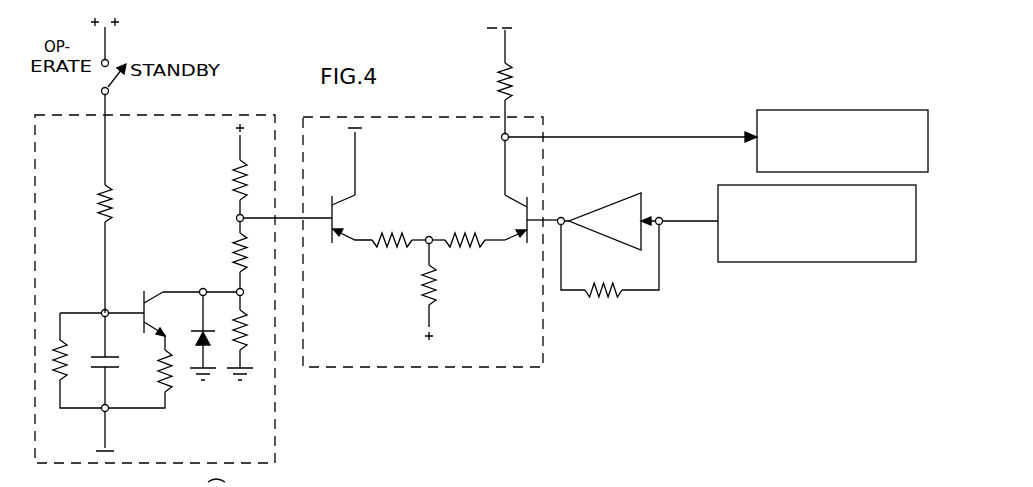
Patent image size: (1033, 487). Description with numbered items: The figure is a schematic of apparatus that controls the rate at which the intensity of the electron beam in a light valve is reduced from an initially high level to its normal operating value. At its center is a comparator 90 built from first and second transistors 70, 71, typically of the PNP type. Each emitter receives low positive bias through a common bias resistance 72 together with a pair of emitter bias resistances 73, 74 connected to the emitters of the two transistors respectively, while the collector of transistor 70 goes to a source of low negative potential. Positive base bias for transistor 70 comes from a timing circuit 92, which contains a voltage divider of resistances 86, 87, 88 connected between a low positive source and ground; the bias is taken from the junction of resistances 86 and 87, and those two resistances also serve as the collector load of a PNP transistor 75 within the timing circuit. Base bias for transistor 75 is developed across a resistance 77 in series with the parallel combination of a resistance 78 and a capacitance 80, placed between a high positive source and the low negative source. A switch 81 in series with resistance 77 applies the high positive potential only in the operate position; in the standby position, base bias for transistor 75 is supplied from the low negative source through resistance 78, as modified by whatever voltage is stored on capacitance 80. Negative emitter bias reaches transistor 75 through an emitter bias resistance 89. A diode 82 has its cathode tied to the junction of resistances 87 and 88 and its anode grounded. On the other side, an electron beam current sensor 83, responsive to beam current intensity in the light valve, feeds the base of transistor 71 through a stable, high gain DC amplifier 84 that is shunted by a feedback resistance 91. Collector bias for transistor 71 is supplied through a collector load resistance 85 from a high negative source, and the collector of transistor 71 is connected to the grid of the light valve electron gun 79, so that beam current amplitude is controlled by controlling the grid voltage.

The first transistor 70 is at (352, 214).
The second transistor 71 is at (516, 215).
The common bias resistance 72 is at (418, 296).
The emitter bias resistance 73 is at (388, 250).
The emitter bias resistance 74 is at (462, 250).
The transistor 75 is at (146, 291).
The resistance 77 is at (96, 199).
The resistance 78 is at (84, 340).
The light valve electron gun 79 is at (834, 108).
The capacitance 80 is at (121, 360).
The switch 81 is at (121, 79).
The diode 82 is at (200, 328).
The electron beam current sensor 83 is at (718, 193).
The DC amplifier 84 is at (610, 200).
The collector load resistance 85 is at (512, 71).
The resistance 86 is at (232, 172).
The resistance 87 is at (232, 247).
The resistance 88 is at (234, 328).
The emitter bias resistance 89 is at (170, 388).
The comparator 90 is at (380, 368).
The feedback resistance 91 is at (612, 300).
The timing circuit 92 is at (276, 422).